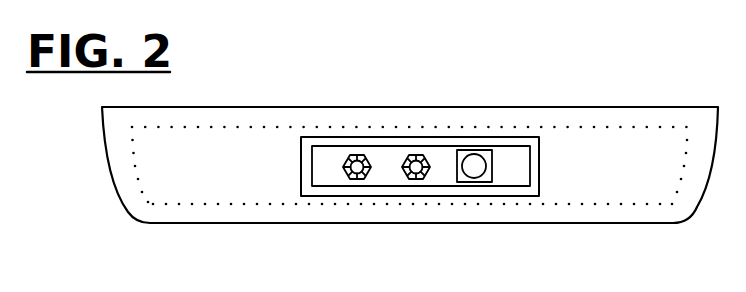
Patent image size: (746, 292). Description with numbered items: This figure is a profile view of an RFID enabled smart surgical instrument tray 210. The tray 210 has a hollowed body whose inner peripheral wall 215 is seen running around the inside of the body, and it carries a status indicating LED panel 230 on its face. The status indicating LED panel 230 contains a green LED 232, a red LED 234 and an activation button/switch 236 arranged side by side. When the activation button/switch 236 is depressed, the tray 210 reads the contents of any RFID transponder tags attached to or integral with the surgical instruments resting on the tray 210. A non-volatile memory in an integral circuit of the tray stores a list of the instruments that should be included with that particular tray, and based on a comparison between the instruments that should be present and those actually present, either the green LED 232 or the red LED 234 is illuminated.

The surgical instrument tray 210 is at (558, 107).
The inner peripheral wall 215 is at (220, 204).
The status indicating LED panel 230 is at (539, 185).
The green LED 232 is at (356, 153).
The red LED 234 is at (416, 153).
The activation button/switch 236 is at (484, 150).